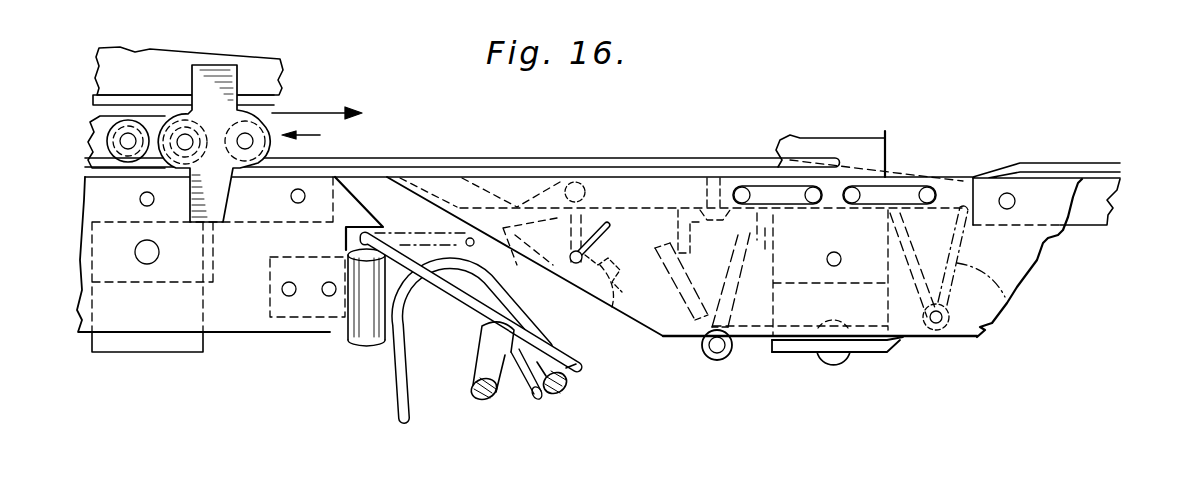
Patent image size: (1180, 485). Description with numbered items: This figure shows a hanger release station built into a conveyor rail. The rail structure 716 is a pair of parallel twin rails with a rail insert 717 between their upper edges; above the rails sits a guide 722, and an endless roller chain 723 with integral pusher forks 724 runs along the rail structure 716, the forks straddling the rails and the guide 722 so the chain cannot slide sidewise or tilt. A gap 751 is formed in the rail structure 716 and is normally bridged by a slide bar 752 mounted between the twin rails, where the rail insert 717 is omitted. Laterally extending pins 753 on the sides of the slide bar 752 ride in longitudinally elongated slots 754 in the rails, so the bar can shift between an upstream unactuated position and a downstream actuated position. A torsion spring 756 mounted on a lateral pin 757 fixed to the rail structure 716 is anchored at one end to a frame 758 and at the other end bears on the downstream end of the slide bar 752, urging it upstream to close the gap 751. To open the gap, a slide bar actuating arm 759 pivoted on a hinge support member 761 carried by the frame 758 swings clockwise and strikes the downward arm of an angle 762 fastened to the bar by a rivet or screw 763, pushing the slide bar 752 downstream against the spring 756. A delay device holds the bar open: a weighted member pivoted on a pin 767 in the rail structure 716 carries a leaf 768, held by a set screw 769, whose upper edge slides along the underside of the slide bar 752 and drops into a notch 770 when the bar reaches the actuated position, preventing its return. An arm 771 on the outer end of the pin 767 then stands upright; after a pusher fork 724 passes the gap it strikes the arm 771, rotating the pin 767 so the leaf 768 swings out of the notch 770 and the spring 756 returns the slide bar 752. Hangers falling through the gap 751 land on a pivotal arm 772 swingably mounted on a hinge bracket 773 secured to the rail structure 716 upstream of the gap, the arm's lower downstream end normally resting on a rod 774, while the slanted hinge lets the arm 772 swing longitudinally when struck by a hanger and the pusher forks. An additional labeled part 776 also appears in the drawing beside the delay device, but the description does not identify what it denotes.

The rail structure 716 is at (1052, 252).
The rail insert 717 is at (1110, 198).
The guide 722 is at (98, 86).
The endless roller chain 723 is at (317, 129).
The pusher fork 724 is at (230, 204).
The gap 751 is at (388, 193).
The slide bar 752 is at (653, 170).
The pins 753 is at (742, 187).
The slots 754 is at (872, 200).
The torsion spring 756 is at (1003, 303).
The pin 757 is at (943, 327).
The frame 758 is at (860, 350).
The slide bar actuating arm 759 is at (690, 330).
The hinge support member 761 is at (765, 340).
The angle 762 is at (702, 280).
The rivet or screw 763 is at (712, 160).
The pin 767 is at (572, 265).
The leaf 768 is at (623, 273).
The set screw 769 is at (612, 307).
The notch 770 is at (568, 176).
The arm 771 is at (580, 250).
The pivotal arm 772 is at (458, 298).
The hinge bracket 773 is at (381, 343).
The rod 774 is at (571, 372).
The link arm 776 is at (540, 240).